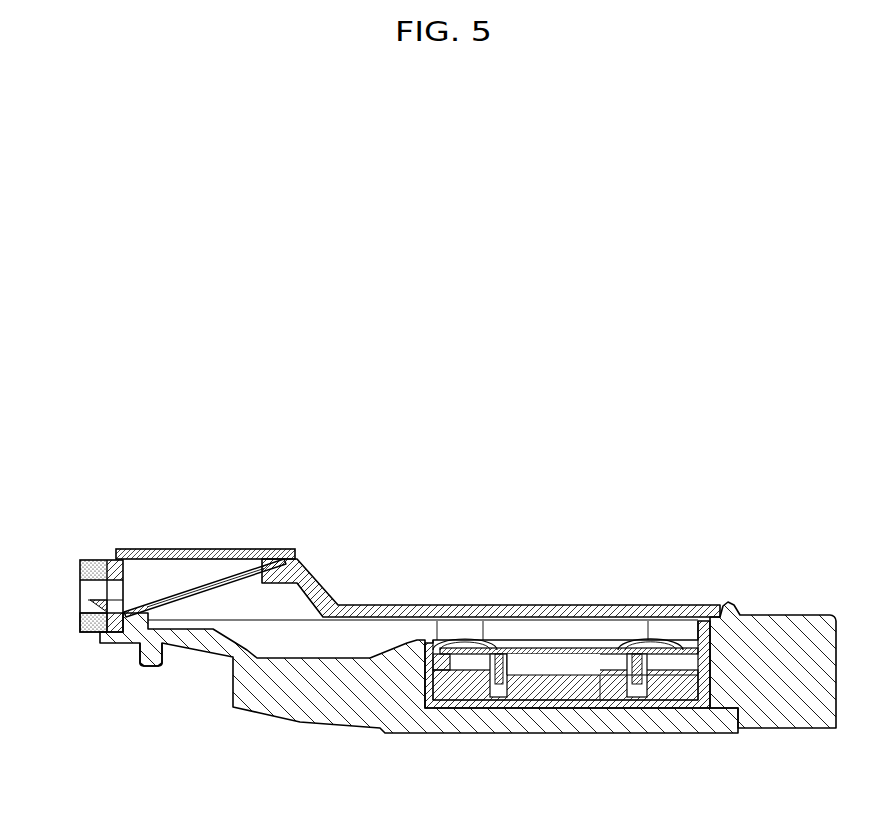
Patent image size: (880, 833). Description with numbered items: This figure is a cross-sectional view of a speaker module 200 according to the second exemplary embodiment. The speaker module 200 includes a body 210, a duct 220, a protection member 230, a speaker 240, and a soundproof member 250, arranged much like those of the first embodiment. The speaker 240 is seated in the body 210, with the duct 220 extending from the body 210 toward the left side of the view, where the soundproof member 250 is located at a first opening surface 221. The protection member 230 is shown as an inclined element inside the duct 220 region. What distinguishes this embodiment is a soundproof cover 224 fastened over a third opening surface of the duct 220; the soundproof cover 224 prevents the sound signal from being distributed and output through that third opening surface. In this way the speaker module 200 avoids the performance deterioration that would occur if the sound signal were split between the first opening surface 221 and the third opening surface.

The speaker module 200 is at (614, 540).
The body 210 is at (781, 704).
The duct 220 is at (153, 661).
The first opening surface 221 is at (88, 593).
The soundproof cover 224 is at (177, 549).
The protection member 230 is at (223, 576).
The speaker 240 is at (570, 710).
The soundproof member 250 is at (88, 634).